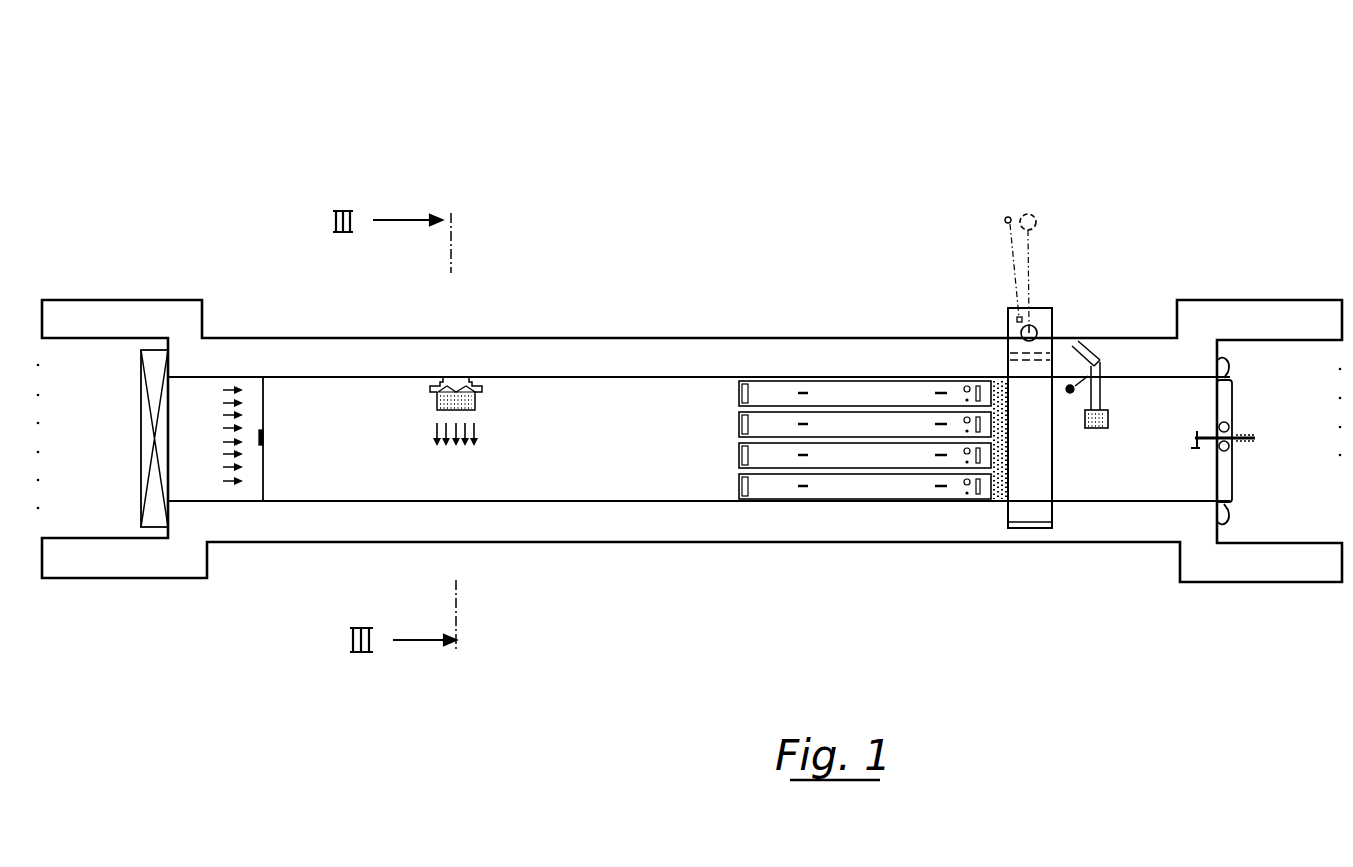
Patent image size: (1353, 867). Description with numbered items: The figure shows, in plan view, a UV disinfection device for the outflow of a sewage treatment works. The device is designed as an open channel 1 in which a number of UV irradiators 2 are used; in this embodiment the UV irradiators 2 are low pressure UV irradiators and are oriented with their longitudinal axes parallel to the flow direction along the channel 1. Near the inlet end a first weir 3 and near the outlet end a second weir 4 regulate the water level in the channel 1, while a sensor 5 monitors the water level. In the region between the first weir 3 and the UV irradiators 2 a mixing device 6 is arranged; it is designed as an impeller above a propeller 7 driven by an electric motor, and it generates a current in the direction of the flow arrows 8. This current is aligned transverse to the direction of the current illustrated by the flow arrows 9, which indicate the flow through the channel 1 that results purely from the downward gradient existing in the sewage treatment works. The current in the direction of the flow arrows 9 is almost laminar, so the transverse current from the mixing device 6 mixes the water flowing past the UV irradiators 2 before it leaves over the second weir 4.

The open channel 1 is at (583, 390).
The UV irradiators 2 is at (778, 425).
The first weir 3 is at (263, 390).
The second weir 4 is at (1217, 487).
The sensor 5 is at (1110, 420).
The mixing device 6 is at (480, 391).
The propeller 7 is at (440, 386).
The flow arrows 8 is at (478, 432).
The flow arrows 9 is at (230, 485).